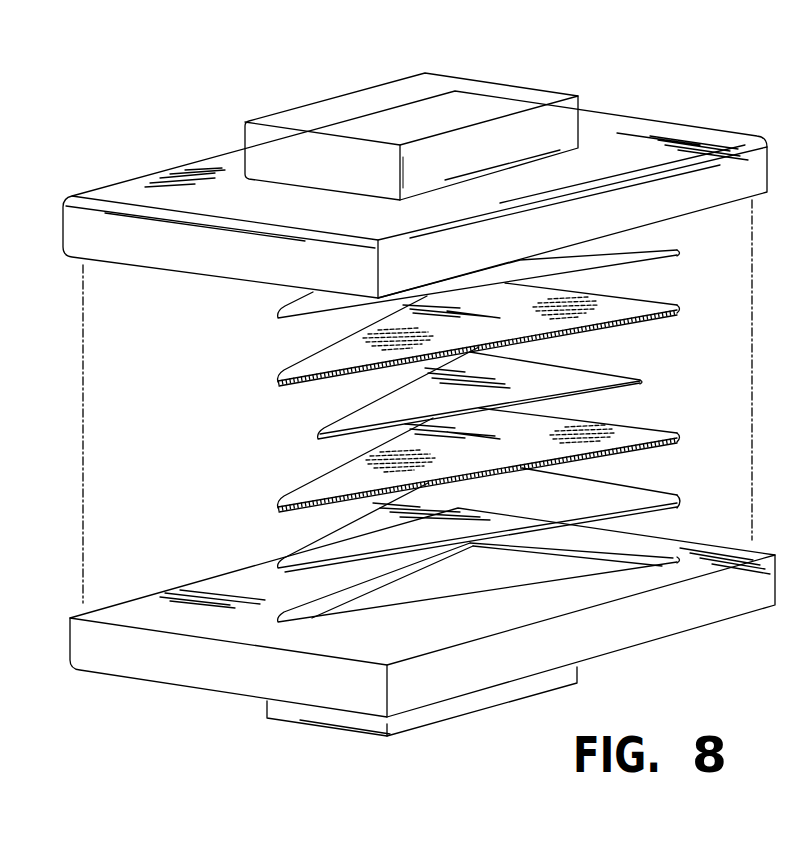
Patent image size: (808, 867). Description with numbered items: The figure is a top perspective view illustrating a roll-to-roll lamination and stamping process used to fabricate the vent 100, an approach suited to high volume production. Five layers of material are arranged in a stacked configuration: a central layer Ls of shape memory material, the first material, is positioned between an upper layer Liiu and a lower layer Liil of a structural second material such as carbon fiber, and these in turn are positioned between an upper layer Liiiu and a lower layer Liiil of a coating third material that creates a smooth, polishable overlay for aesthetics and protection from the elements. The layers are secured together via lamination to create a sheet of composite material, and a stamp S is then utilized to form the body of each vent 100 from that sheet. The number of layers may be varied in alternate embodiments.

The stamp S is at (674, 110).
The vent 100 is at (213, 290).
The upper layer of coating material Liiiu is at (652, 246).
The upper layer of structural material Liiu is at (650, 306).
The layer of shape memory material Ls is at (615, 375).
The lower layer of structural material Liil is at (650, 430).
The lower layer of coating material Liiil is at (650, 492).